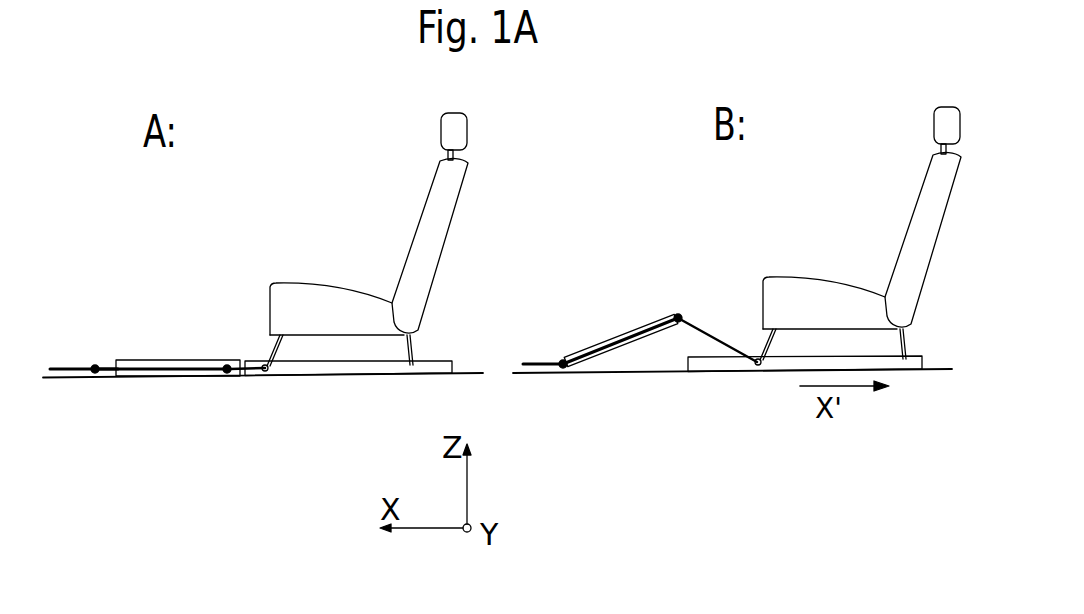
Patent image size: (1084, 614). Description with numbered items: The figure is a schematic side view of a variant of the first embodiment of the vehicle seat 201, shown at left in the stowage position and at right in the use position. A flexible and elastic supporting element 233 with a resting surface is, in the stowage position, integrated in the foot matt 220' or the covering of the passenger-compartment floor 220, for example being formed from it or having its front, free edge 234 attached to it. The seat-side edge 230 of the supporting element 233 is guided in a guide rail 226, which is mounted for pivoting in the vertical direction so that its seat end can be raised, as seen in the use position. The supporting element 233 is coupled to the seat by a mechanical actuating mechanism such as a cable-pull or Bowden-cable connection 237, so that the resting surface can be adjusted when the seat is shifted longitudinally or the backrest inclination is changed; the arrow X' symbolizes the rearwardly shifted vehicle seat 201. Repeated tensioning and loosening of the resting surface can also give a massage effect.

The vehicle seat 201 is at (343, 241).
The passenger-compartment floor 220 is at (590, 356).
The foot matt 220' is at (321, 312).
The guide rail 226 is at (144, 350).
The supporting element 233 is at (192, 352).
The front, free edge 234 is at (95, 373).
The seat-side edge 230 is at (227, 373).
The cable-pull or Bowden-cable connection 237 is at (247, 366).